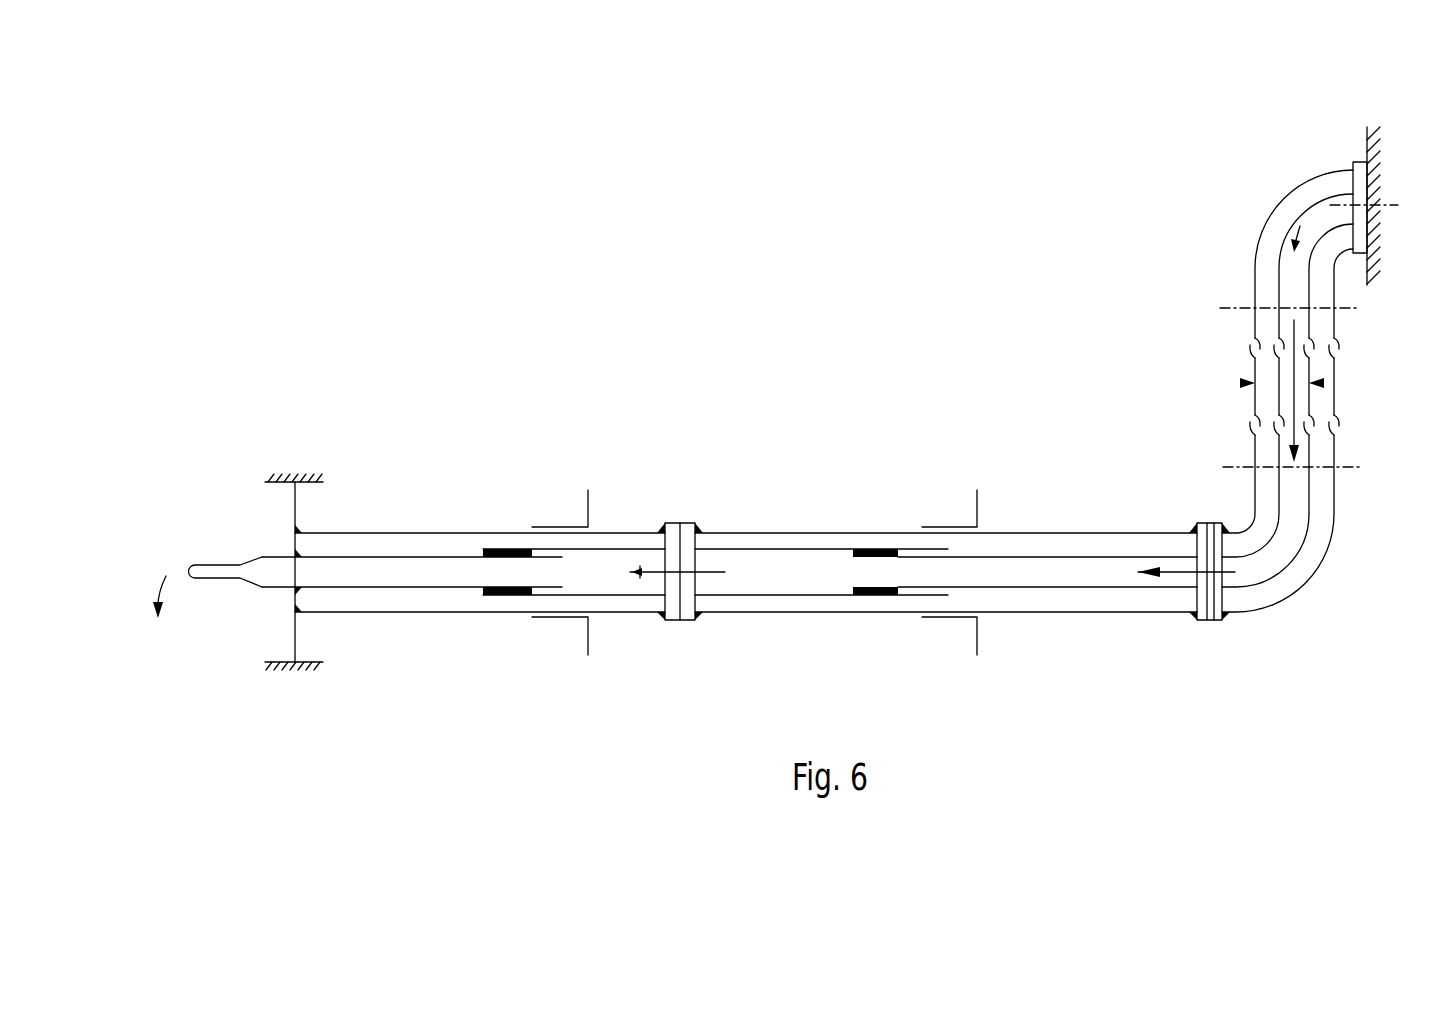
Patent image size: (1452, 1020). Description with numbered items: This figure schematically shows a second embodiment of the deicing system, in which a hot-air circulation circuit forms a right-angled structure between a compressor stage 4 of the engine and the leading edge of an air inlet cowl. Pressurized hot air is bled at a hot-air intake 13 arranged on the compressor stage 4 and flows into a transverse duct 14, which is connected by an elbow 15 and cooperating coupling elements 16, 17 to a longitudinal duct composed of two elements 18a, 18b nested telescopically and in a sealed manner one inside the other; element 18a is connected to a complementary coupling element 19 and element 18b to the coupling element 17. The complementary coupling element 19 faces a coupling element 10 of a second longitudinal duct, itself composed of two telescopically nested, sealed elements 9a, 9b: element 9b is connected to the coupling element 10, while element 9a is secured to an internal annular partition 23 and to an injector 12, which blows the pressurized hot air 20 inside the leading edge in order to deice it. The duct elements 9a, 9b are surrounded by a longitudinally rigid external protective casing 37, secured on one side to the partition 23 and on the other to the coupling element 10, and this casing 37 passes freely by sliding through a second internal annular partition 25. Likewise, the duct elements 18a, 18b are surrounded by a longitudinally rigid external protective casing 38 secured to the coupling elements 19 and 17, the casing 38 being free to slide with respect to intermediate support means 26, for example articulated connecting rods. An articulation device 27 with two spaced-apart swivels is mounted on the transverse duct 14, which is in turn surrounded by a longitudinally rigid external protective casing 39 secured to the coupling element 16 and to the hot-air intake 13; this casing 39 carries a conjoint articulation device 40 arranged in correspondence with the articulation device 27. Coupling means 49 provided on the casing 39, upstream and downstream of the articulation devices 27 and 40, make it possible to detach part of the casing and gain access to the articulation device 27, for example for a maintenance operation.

The compressor stage 4 is at (1451, 175).
The longitudinal duct element 9a is at (418, 573).
The longitudinal duct element 9b is at (607, 572).
The coupling element 10 is at (672, 612).
The injector 12 is at (218, 573).
The pressurized hot-air intake 13 is at (1360, 178).
The transverse duct 14 is at (1290, 527).
The elbow 15 is at (1287, 568).
The coupling element 16 is at (1215, 612).
The coupling element 17 is at (1205, 612).
The longitudinal duct element 18a is at (797, 573).
The longitudinal duct element 18b is at (1077, 572).
The complementary coupling element 19 is at (688, 612).
The pressurized hot air 20 is at (190, 571).
The internal annular partition 23 is at (300, 502).
The internal annular partition 25 is at (590, 512).
The intermediate support means 26 is at (978, 518).
The articulation device 27 is at (1322, 383).
The external protective casing 37 is at (425, 533).
The external protective casing 38 is at (1087, 533).
The external protective casing 39 is at (1250, 250).
The conjoint articulation device 40 is at (1242, 383).
The coupling means 49 is at (1232, 306).